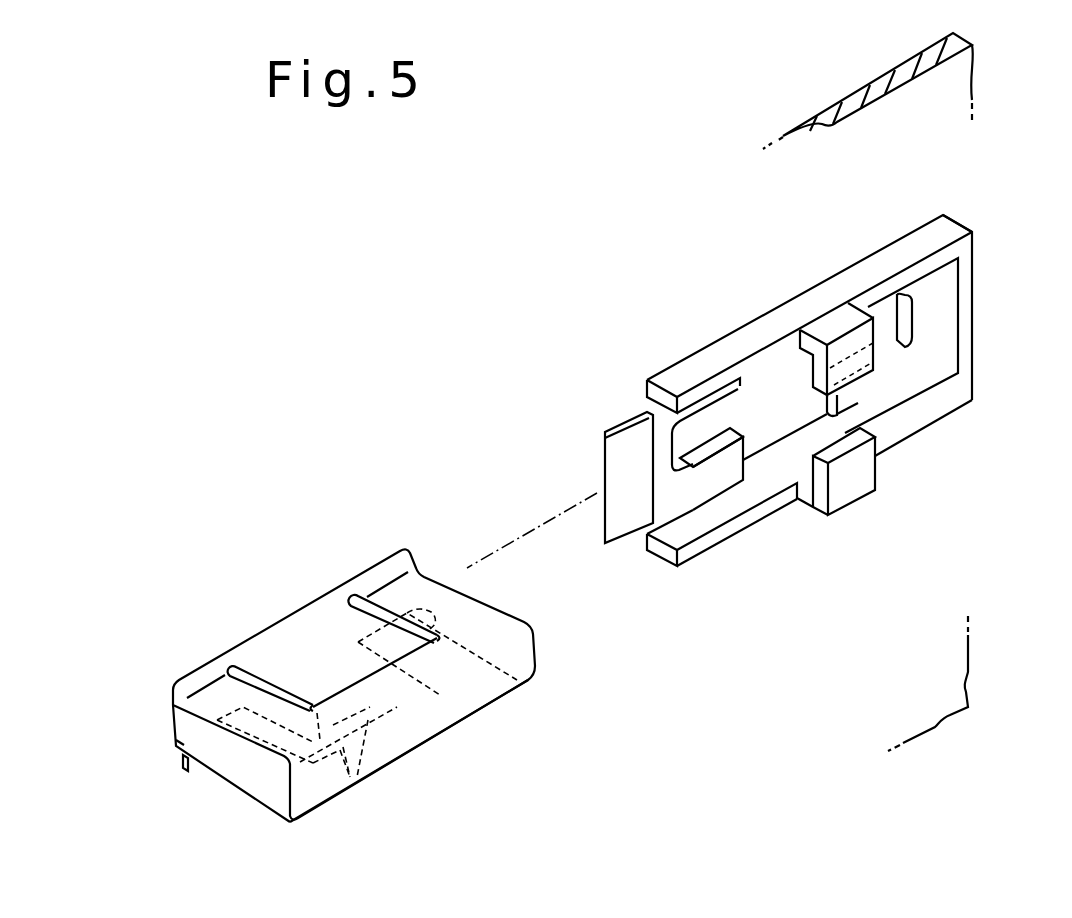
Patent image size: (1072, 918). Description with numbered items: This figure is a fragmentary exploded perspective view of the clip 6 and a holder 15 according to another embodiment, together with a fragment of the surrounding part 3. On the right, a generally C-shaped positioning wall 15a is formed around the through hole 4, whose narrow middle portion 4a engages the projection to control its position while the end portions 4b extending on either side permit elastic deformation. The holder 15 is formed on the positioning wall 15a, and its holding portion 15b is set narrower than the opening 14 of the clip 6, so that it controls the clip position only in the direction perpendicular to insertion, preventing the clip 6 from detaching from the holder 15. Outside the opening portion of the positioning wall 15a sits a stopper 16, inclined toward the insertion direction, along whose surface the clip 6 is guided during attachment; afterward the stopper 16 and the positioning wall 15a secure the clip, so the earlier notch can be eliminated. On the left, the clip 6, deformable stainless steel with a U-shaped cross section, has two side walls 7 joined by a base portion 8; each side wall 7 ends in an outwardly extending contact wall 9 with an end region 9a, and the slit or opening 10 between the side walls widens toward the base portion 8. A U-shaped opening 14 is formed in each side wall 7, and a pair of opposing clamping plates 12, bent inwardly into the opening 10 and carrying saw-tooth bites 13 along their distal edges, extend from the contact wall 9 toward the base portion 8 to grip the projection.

The blade 3 is at (990, 80).
The through hole 4 is at (731, 395).
The middle portion 4a is at (905, 328).
The end portions 4b is at (847, 413).
The clip 6 is at (494, 741).
The side walls 7 is at (457, 594).
The base portion 8 is at (428, 730).
The contact wall 9 is at (301, 607).
The groove end 9a is at (418, 548).
The opening 10 is at (192, 728).
The clamping plates 12 is at (290, 665).
The bites 13 is at (307, 773).
The opening 14 is at (440, 633).
The holder 15 is at (829, 304).
The positioning wall 15a is at (946, 223).
The holding portion 15b is at (838, 346).
The stopper 16 is at (630, 540).